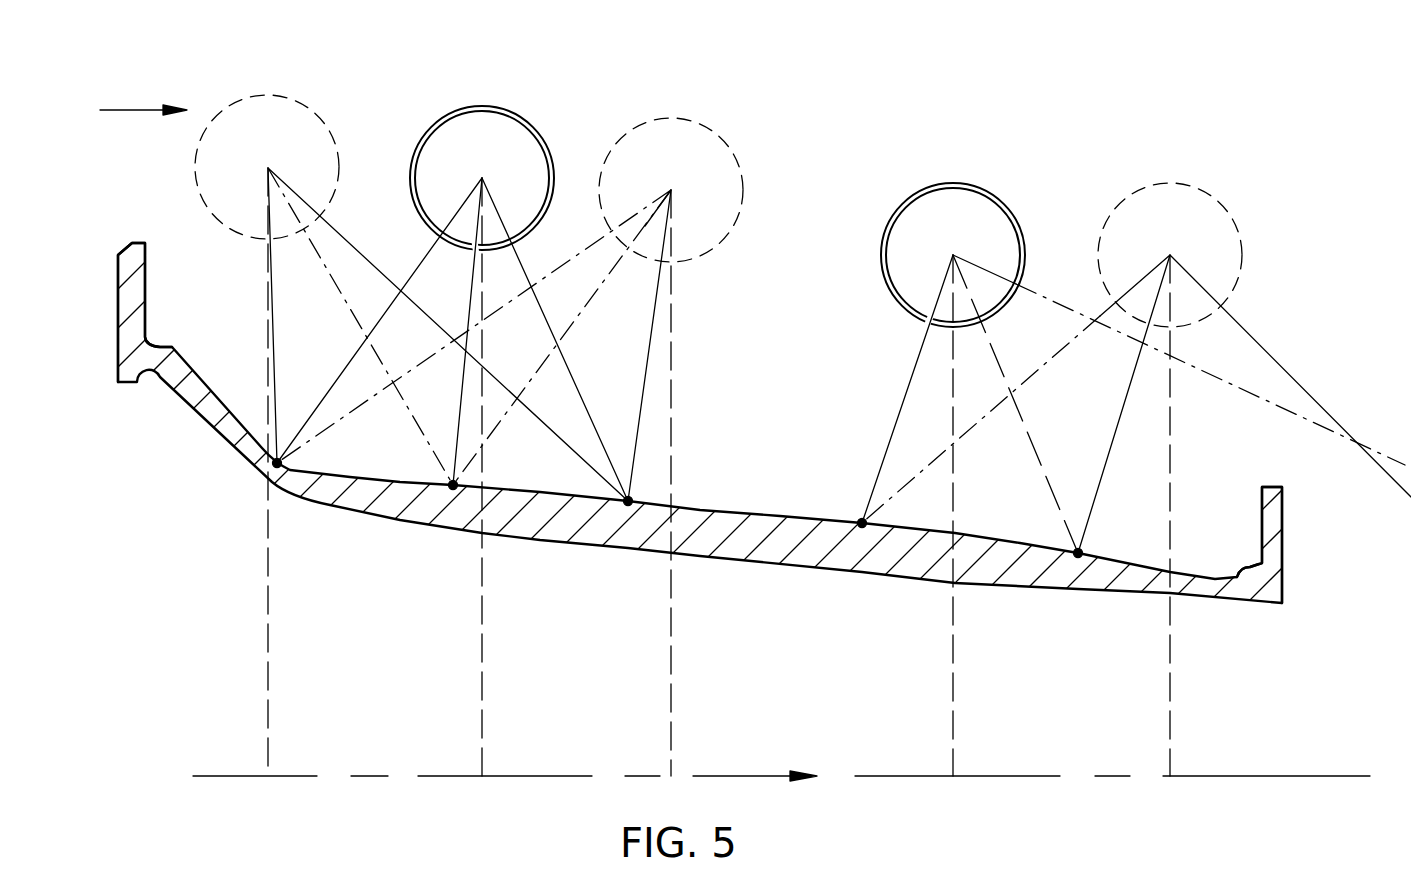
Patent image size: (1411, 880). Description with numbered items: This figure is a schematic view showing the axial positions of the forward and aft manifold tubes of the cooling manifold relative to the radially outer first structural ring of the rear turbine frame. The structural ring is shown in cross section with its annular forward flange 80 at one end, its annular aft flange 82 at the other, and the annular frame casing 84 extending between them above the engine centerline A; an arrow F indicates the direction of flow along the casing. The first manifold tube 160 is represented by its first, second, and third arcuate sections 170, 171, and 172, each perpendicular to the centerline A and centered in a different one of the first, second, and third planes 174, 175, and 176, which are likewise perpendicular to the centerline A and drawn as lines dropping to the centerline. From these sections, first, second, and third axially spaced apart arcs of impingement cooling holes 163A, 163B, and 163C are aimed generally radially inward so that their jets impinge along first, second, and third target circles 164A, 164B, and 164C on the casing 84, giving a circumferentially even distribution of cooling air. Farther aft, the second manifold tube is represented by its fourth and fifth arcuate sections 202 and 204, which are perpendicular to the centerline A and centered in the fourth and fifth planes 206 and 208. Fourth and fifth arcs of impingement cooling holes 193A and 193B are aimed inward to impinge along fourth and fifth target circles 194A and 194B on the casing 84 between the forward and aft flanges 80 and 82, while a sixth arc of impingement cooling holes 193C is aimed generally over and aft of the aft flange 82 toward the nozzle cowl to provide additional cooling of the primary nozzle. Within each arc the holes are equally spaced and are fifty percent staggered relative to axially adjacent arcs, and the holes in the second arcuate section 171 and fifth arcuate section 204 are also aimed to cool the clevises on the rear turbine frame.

The forward flange 80 is at (131, 264).
The aft flange 82 is at (1270, 507).
The frame casing 84 is at (700, 510).
The first manifold tube 160 is at (511, 151).
The first arcuate section 170 is at (534, 126).
The second arcuate section 171 is at (266, 95).
The third arcuate section 172 is at (727, 145).
The first arc of impingement cooling holes 163A is at (443, 239).
The second arc of impingement cooling holes 163B is at (481, 252).
The third arc of impingement cooling holes 163C is at (514, 253).
The first target circle 164A is at (272, 466).
The second target circle 164B is at (452, 490).
The third target circle 164C is at (628, 506).
The first plane 174 is at (270, 632).
The second plane 175 is at (485, 632).
The third plane 176 is at (673, 632).
The fourth arc of impingement cooling holes 193A is at (925, 328).
The fifth arc of impingement cooling holes 193B is at (985, 364).
The sixth arc of impingement cooling holes 193C is at (1016, 289).
The fourth target circle 194A is at (861, 528).
The fifth target circle 194B is at (1076, 558).
The fourth arcuate section 202 is at (953, 184).
The fifth arcuate section 204 is at (1202, 188).
The fourth plane 206 is at (955, 699).
The fifth plane 208 is at (1173, 700).
The flow direction F is at (138, 108).
The centerline A is at (745, 775).